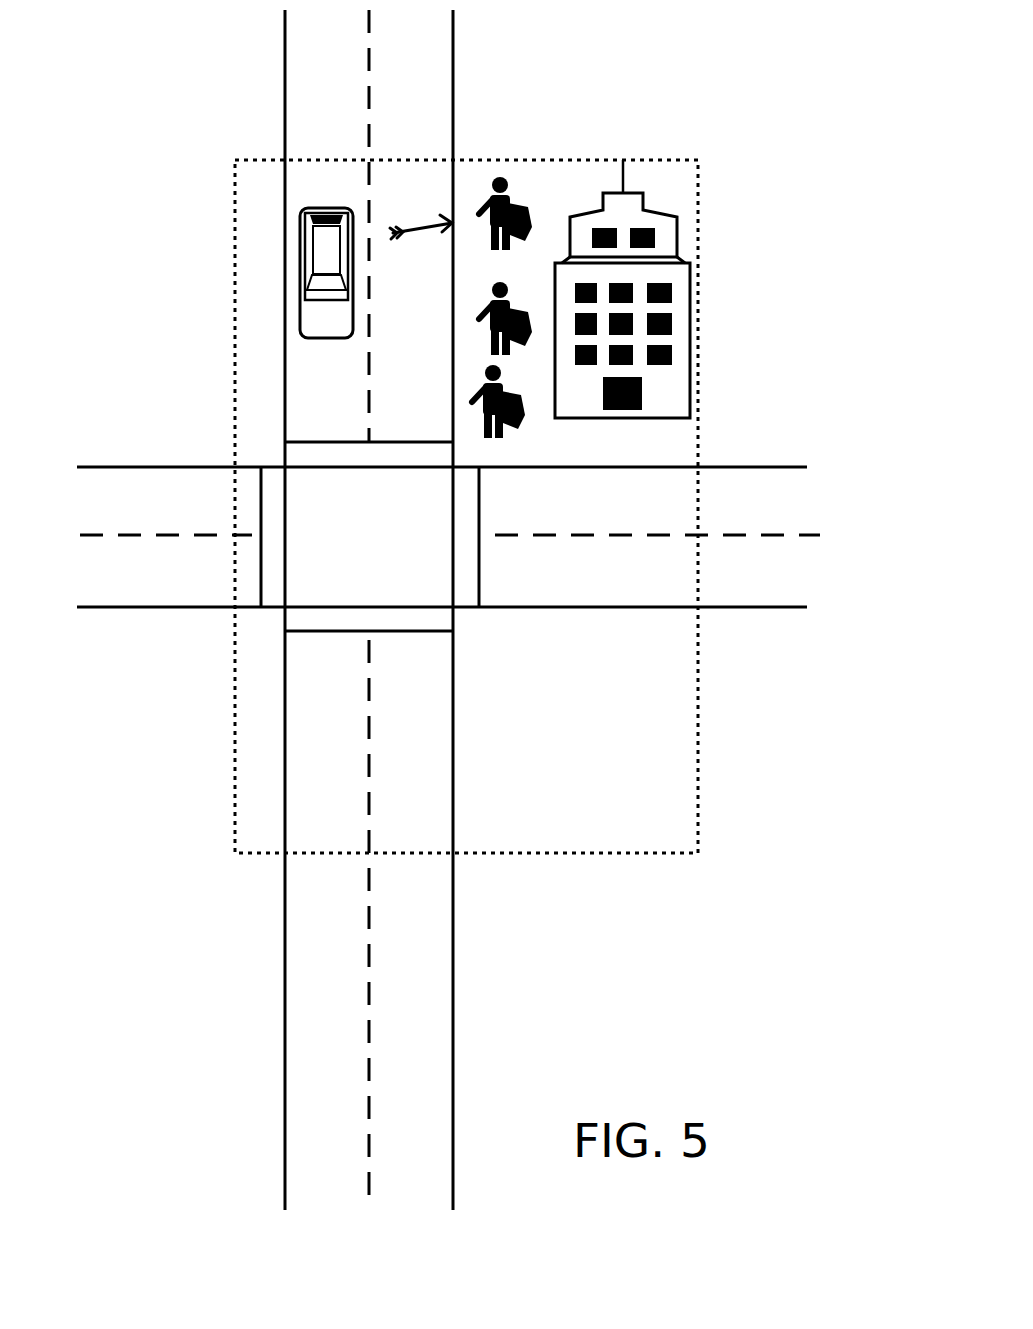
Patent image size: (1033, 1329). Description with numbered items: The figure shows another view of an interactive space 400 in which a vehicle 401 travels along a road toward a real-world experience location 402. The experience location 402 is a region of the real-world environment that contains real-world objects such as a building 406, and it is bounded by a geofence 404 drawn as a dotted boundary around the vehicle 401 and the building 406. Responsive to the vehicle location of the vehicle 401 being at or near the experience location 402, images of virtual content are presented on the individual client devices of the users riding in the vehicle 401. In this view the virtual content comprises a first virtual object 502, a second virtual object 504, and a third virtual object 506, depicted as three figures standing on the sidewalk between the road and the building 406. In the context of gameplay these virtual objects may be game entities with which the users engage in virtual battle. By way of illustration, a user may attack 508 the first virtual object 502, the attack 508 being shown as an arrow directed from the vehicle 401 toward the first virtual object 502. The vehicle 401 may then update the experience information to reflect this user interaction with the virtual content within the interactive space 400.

The interactive space 400 is at (705, 92).
The vehicle 401 is at (310, 310).
The experience location 402 is at (639, 689).
The geofence 404 is at (697, 213).
The building 406 is at (672, 358).
The first virtual object 502 is at (504, 180).
The second virtual object 504 is at (490, 314).
The third virtual object 506 is at (515, 423).
The attack 508 is at (405, 228).